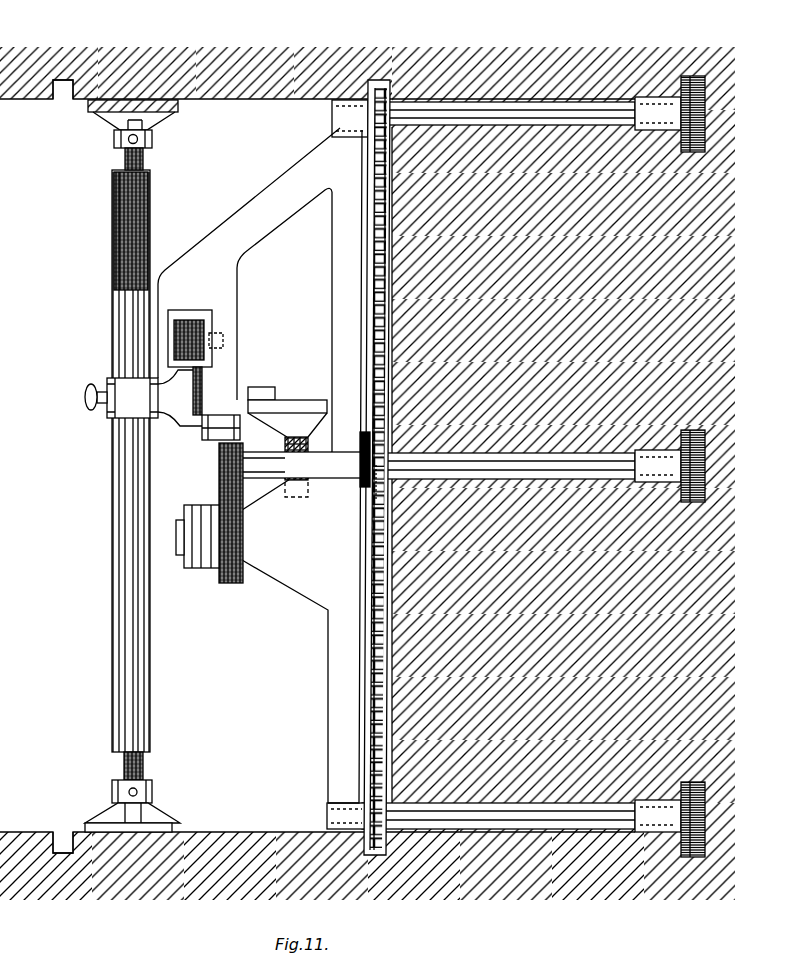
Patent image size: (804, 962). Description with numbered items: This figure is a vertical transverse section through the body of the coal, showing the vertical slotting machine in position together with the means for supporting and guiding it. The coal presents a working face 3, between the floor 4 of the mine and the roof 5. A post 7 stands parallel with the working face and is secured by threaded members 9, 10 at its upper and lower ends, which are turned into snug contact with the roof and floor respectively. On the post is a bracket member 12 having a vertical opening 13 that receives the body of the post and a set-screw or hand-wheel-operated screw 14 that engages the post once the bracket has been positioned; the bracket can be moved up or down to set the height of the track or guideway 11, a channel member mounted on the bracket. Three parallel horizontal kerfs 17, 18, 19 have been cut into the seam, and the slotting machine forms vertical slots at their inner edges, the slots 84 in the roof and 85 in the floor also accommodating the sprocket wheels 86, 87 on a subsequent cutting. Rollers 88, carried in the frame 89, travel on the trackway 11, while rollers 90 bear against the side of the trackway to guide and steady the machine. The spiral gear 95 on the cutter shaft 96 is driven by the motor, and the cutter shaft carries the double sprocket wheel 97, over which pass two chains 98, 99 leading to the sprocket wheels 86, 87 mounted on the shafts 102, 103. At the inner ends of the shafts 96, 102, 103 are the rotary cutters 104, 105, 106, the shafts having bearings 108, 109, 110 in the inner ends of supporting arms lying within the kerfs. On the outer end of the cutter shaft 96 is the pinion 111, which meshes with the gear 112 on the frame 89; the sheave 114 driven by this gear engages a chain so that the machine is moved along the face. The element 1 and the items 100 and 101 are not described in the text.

The base wall 1 is at (680, 321).
The working face 3 is at (392, 646).
The floor 4 is at (262, 832).
The roof 5 is at (300, 100).
The post 7 is at (133, 498).
The threaded member 9 is at (145, 158).
The threaded member 10 is at (150, 768).
The track or guideway 11 is at (200, 387).
The bracket member 12 is at (133, 403).
The vertical opening 13 is at (100, 410).
The set-screw or hand-wheel-operated screw 14 is at (55, 432).
The kerf 17 is at (487, 103).
The kerf 18 is at (490, 452).
The kerf 19 is at (517, 804).
The slot 84 is at (62, 100).
The slot 85 is at (68, 843).
The sprocket wheel 86 is at (328, 803).
The sprocket wheel 87 is at (380, 80).
The rollers 88 is at (212, 332).
The frame 89 is at (212, 247).
The rollers 90 is at (207, 428).
The spiral gear 95 is at (296, 437).
The cutter shaft 96 is at (388, 492).
The double sprocket wheel 97 is at (358, 485).
The link belt or chain 98 is at (378, 328).
The link belt or chain 99 is at (371, 620).
The bore 100 is at (430, 98).
The bore 101 is at (380, 853).
The shaft 102 is at (458, 88).
The shaft 103 is at (440, 818).
The rotary cutter 104 is at (705, 80).
The rotary cutter 105 is at (705, 446).
The rotary cutter 106 is at (705, 802).
The bearing 108 is at (665, 98).
The bearing 109 is at (690, 445).
The bearing 110 is at (690, 800).
The pinion 111 is at (218, 472).
The gear 112 is at (232, 587).
The sheave 114 is at (203, 573).